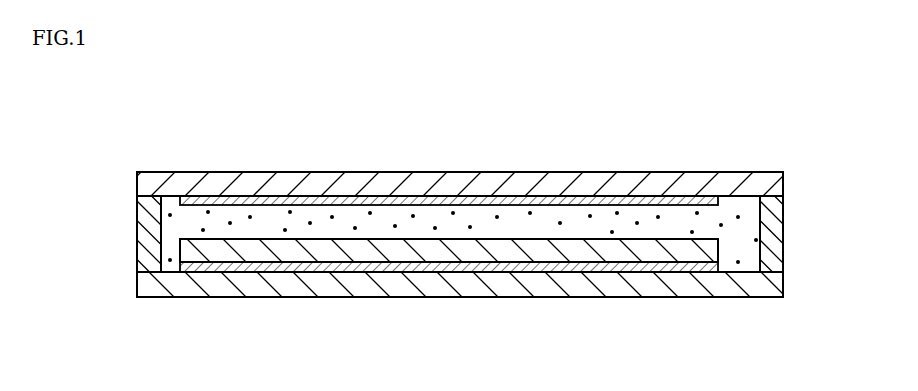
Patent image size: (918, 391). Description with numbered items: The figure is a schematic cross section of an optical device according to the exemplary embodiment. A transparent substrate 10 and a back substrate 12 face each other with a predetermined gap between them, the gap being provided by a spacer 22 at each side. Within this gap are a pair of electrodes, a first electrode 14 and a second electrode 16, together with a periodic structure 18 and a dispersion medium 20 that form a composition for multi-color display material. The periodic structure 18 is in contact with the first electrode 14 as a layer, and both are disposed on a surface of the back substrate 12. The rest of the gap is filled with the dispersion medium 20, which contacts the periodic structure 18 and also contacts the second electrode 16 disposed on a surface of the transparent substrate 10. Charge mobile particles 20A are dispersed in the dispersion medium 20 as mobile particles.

The transparent substrate 10 is at (690, 172).
The back substrate 12 is at (693, 297).
The first electrode 14 is at (508, 268).
The second electrode 16 is at (316, 205).
The periodic structure 18 is at (400, 255).
The dispersion medium 20 is at (491, 218).
The charge mobile particles 20A is at (383, 218).
The spacer 22 is at (137, 229).